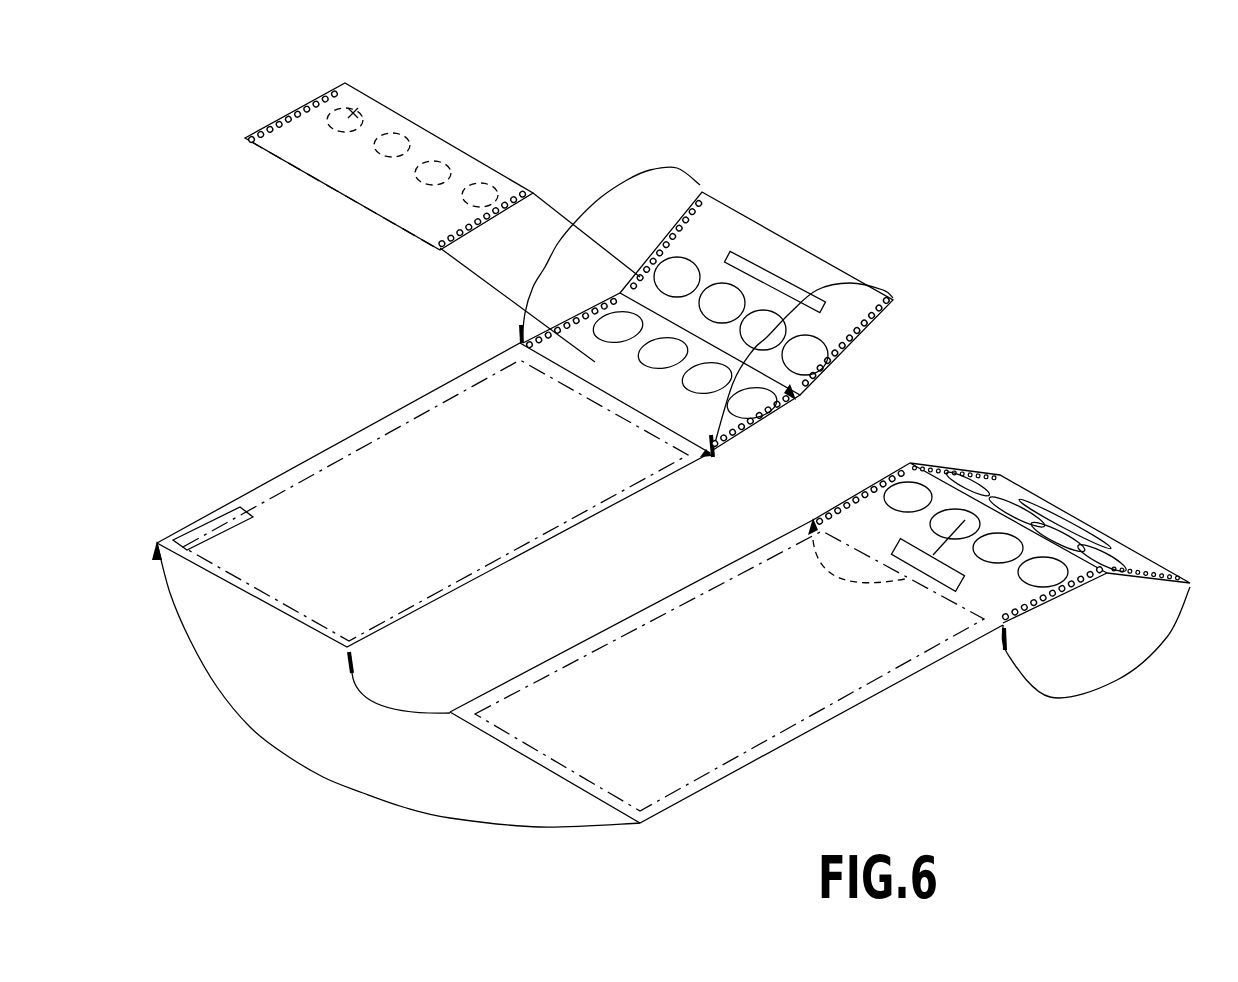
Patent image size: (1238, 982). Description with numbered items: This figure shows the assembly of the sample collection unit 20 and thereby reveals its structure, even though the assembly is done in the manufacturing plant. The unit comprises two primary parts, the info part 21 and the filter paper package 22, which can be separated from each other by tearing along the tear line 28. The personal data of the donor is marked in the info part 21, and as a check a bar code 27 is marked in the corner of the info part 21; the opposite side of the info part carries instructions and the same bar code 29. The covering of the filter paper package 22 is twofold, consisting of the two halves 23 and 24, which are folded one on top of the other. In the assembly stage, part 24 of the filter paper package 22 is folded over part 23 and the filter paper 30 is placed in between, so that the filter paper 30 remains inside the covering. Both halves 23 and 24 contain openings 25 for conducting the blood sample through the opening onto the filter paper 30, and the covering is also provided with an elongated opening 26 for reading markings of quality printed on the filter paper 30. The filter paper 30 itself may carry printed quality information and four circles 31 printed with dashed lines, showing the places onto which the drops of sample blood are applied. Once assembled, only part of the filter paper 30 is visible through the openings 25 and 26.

The sample collection unit 20 is at (385, 405).
The info part 21 is at (336, 463).
The filter paper package 22 is at (645, 218).
The covering half 23 is at (775, 425).
The covering half 24 is at (893, 300).
The openings 25 is at (812, 352).
The elongated opening 26 is at (768, 277).
The bar code 27 is at (212, 517).
The tear line 28 is at (610, 398).
The bar code 29 is at (930, 560).
The filter paper 30 is at (428, 140).
The circles 31 is at (353, 112).